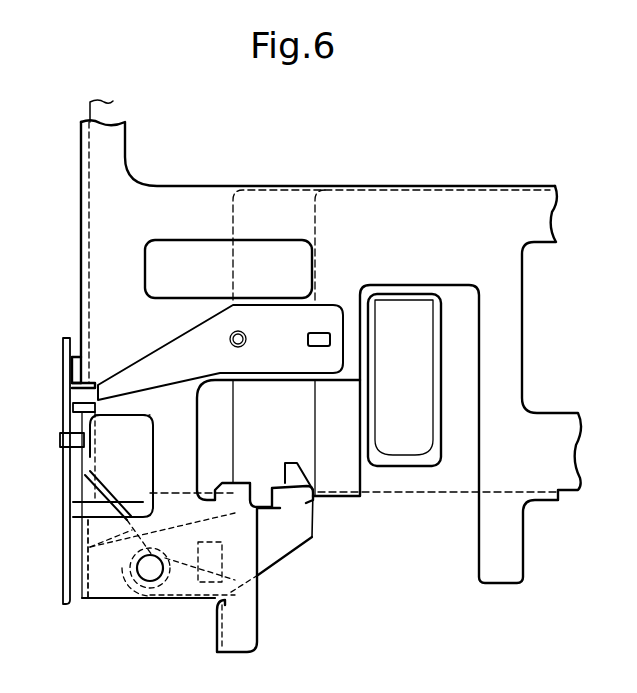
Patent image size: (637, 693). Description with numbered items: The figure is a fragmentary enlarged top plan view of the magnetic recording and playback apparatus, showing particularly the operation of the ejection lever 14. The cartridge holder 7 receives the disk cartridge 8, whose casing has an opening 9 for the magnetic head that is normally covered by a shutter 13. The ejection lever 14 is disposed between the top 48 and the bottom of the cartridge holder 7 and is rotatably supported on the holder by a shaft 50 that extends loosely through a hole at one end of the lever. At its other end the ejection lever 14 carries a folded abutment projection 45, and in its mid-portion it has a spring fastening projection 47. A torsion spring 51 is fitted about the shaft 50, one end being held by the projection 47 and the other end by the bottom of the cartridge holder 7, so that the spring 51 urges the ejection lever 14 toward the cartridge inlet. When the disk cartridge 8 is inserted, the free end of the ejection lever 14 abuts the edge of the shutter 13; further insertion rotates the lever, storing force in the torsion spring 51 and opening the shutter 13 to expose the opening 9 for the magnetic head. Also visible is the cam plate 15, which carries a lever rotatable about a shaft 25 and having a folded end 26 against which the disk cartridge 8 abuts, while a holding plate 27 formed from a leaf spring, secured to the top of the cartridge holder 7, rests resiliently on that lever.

The cartridge holder 7 is at (180, 185).
The disk cartridge 8 is at (117, 452).
The opening for the magnetic head 9 is at (433, 365).
The shutter 13 is at (455, 492).
The ejection lever 14 is at (293, 545).
The cam plate 15 is at (62, 368).
The shaft 25 is at (60, 440).
The folded end 26 is at (85, 500).
The holding plate 27 is at (148, 355).
The folded abutment projection 45 is at (316, 500).
The spring fastening projection 47 is at (262, 568).
The top of the cartridge holder 48 is at (108, 593).
The shaft 50 is at (150, 578).
The torsion spring 51 is at (87, 552).